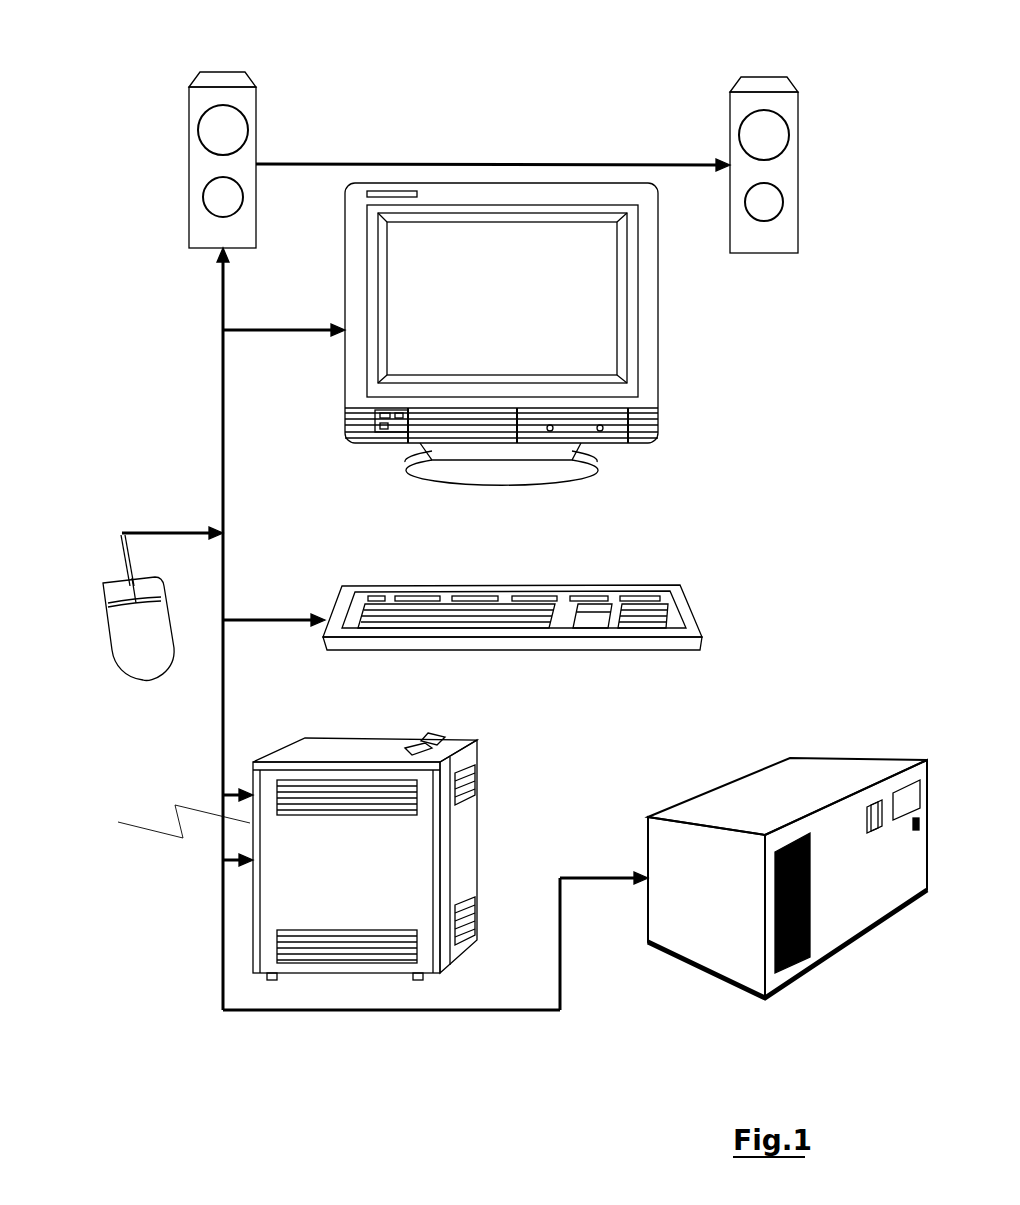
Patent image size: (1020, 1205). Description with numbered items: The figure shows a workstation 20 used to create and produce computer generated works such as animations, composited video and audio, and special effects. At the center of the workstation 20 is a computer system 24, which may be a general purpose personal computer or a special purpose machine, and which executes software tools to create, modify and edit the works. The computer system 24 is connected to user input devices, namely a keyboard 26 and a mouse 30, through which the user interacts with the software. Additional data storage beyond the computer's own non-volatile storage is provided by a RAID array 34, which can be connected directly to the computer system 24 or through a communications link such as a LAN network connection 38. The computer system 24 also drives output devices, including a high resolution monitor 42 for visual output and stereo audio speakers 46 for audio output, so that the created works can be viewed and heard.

The workstation 20 is at (768, 360).
The computer system 24 is at (490, 738).
The keyboard 26 is at (714, 615).
The mouse 30 is at (104, 662).
The RAID array 34 is at (790, 748).
The LAN network connection 38 is at (168, 819).
The high resolution monitor 42 is at (501, 334).
The stereo audio speakers 46 is at (262, 75).